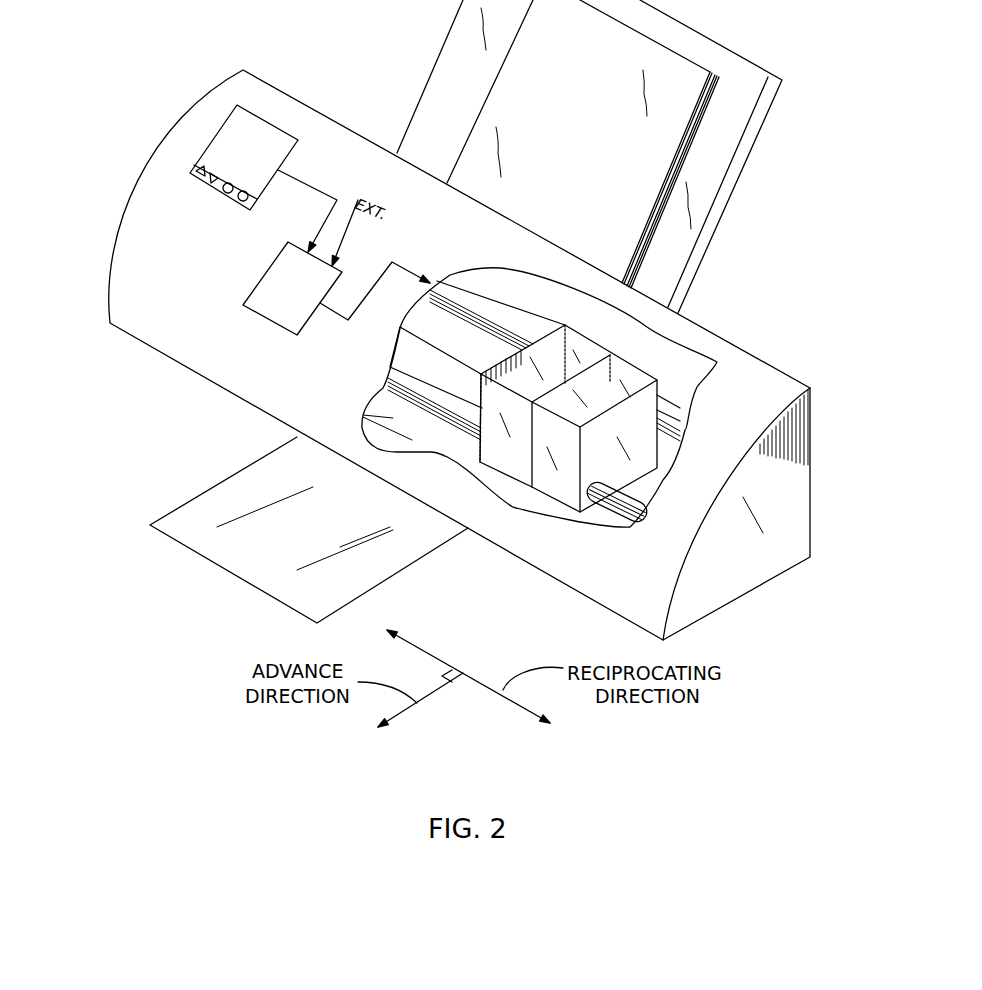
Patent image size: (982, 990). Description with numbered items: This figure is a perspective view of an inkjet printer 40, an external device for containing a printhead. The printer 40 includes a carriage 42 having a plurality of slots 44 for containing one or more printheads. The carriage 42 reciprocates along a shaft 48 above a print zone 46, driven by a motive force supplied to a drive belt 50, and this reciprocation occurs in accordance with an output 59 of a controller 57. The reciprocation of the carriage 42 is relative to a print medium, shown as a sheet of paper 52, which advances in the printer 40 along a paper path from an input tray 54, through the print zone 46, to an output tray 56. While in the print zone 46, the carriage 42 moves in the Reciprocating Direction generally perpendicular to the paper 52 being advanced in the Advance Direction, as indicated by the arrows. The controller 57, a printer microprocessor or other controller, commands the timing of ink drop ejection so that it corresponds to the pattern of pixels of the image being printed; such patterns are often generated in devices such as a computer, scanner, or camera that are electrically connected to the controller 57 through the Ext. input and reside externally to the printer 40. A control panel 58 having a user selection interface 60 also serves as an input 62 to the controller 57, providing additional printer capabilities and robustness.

The inkjet printer 40 is at (160, 90).
The carriage 42 is at (524, 492).
The slots 44 is at (580, 343).
The print zone 46 is at (414, 427).
The shaft 48 is at (617, 507).
The drive belt 50 is at (677, 413).
The sheet of paper 52 is at (582, 142).
The input tray 54 is at (715, 155).
The output tray 56 is at (220, 510).
The controller 57 is at (262, 313).
The control panel 58 is at (267, 122).
The output 59 is at (330, 318).
The user selection interface 60 is at (210, 188).
The input 62 is at (322, 219).